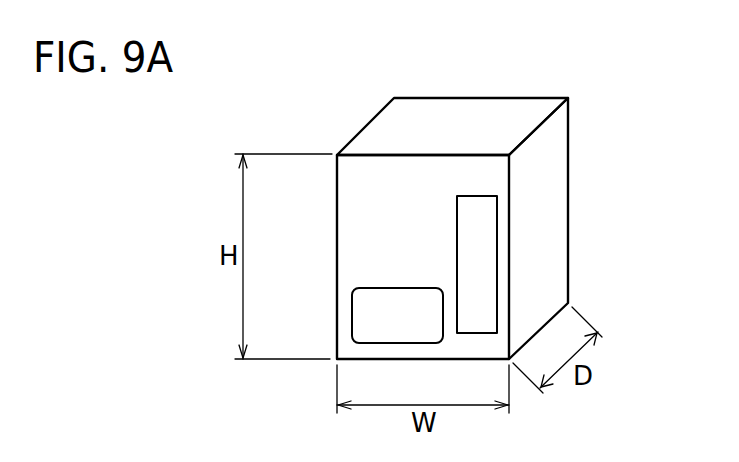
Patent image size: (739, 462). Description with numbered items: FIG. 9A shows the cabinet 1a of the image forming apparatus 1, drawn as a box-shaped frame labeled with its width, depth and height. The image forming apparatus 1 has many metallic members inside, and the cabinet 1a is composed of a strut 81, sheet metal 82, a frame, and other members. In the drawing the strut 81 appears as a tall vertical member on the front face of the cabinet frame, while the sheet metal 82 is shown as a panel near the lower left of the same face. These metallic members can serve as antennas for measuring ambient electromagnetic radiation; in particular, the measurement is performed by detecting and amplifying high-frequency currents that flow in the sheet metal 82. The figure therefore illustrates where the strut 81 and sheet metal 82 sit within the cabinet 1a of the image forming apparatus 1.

The image forming apparatus 1 is at (478, 185).
The cabinet 1a is at (547, 167).
The strut 81 is at (473, 285).
The sheet metal 82 is at (353, 326).